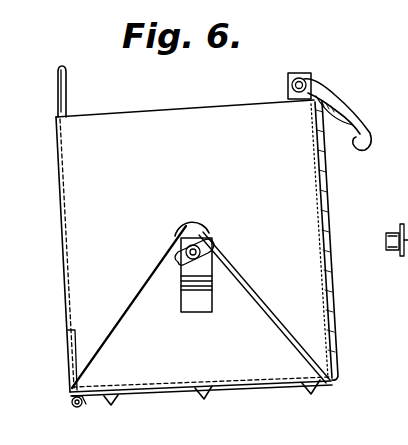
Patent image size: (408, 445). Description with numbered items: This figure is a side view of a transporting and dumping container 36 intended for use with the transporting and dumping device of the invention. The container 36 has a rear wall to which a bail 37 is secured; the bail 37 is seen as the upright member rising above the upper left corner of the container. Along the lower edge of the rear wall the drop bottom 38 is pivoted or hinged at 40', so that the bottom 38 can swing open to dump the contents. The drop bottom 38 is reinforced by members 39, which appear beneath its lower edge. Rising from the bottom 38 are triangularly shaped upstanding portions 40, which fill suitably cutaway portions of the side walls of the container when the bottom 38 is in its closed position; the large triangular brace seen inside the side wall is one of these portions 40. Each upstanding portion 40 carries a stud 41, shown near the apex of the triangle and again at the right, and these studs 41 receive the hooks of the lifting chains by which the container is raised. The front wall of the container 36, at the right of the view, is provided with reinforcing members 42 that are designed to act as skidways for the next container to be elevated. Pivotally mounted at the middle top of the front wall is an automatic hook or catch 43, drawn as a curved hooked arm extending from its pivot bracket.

The transporting and dumping container 36 is at (80, 210).
The bail 37 is at (58, 96).
The drop bottom 38 is at (228, 388).
The reinforcing members 39 is at (306, 386).
The triangularly shaped upstanding portions 40 is at (201, 305).
The pivot 40' is at (80, 414).
The studs 41 is at (210, 244).
The reinforcing members 42 is at (323, 232).
The automatic hook or catch 43 is at (351, 110).